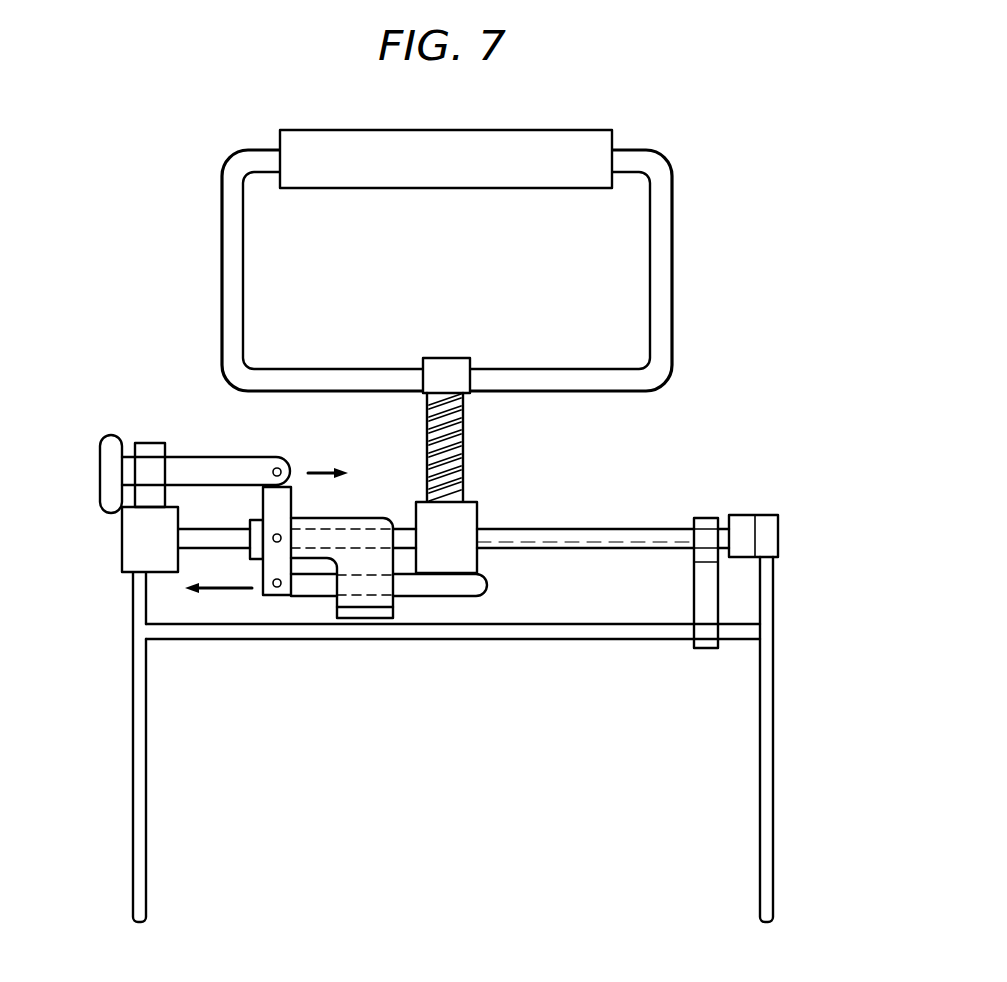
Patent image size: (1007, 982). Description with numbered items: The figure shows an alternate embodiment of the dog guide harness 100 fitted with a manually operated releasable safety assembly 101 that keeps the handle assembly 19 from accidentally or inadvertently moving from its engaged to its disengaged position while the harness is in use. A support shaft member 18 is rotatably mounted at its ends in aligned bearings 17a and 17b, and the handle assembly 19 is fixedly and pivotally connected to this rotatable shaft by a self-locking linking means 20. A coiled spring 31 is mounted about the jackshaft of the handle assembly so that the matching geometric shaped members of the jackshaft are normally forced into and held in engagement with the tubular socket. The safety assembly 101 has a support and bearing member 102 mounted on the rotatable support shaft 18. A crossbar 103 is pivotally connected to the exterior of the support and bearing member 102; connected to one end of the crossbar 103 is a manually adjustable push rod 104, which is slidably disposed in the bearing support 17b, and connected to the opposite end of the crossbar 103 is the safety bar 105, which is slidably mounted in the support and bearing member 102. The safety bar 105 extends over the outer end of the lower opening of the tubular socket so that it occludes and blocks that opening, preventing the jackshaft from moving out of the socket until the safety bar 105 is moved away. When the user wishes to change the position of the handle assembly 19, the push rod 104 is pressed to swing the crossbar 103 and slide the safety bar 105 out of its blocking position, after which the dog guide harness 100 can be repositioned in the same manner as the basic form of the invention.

The dog guide harness 100 is at (776, 439).
The releasable safety assembly 101 is at (165, 409).
The handle assembly 19 is at (673, 272).
The coiled spring 31 is at (465, 450).
The self-locking linking means 20 is at (490, 512).
The support shaft member 18 is at (583, 535).
The bearing 17a is at (757, 532).
The bearing support 17b is at (134, 553).
The support and bearing member 102 is at (374, 526).
The crossbar 103 is at (298, 477).
The push rod 104 is at (222, 468).
The safety bar 105 is at (424, 590).